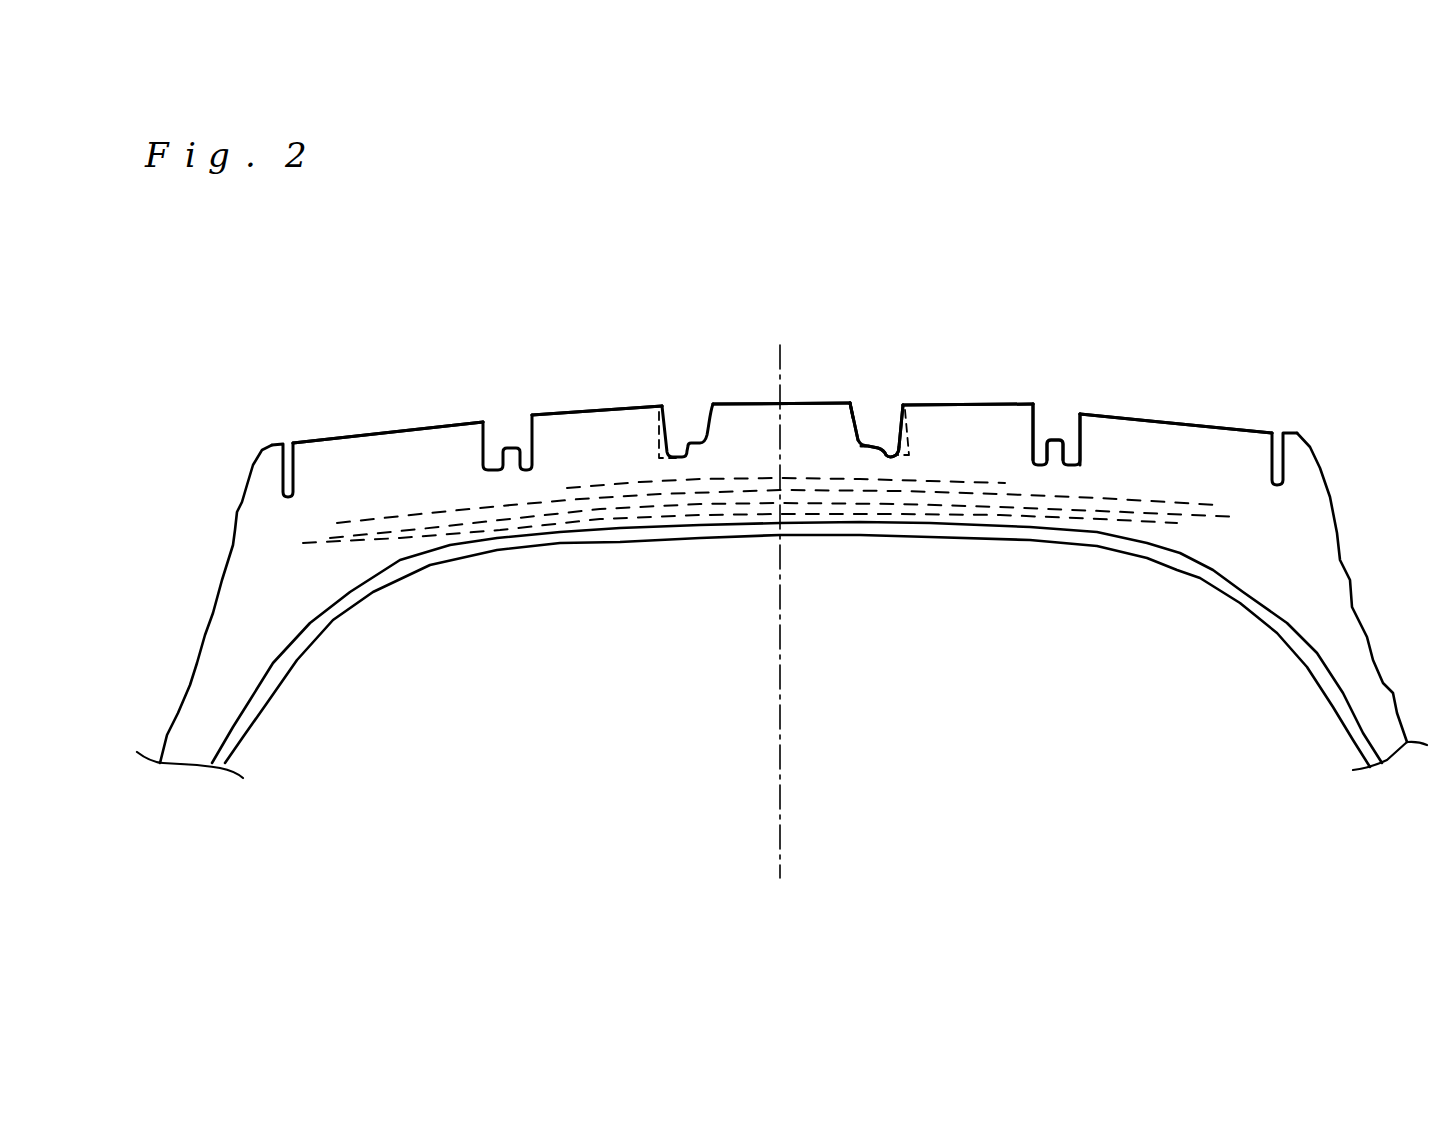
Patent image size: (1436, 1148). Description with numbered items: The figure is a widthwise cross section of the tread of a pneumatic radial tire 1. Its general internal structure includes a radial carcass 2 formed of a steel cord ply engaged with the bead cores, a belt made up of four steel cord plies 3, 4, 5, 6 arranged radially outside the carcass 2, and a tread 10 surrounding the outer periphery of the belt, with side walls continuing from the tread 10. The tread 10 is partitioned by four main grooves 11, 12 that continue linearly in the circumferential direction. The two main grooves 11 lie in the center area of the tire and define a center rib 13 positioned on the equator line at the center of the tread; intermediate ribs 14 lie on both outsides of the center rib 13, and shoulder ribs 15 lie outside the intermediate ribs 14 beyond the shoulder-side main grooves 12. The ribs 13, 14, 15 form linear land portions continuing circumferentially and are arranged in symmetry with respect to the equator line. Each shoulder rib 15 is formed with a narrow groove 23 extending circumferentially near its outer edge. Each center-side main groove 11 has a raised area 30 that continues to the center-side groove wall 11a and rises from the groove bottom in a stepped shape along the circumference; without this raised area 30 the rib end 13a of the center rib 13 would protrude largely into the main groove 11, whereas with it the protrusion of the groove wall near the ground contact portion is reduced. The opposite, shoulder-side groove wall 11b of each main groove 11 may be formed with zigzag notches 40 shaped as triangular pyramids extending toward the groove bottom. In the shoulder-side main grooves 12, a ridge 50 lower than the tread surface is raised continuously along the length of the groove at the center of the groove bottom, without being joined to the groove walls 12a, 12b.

The pneumatic tire 1 is at (1080, 273).
The radial carcass 2 is at (1283, 620).
The steel cord ply 3 is at (657, 517).
The steel cord ply 4 is at (616, 510).
The steel cord ply 5 is at (528, 503).
The steel cord ply 6 is at (579, 488).
The tread 10 is at (380, 432).
The main groove 11 is at (687, 423).
The groove wall 11a is at (857, 431).
The shoulder-side groove wall 11b is at (902, 408).
The main groove 12 is at (502, 427).
The groove wall 12a is at (1037, 432).
The groove wall 12b is at (1080, 427).
The center rib 13 is at (738, 423).
The rib end 13a is at (848, 388).
The intermediate rib 14 is at (593, 437).
The shoulder rib 15 is at (430, 440).
The narrow groove 23 is at (290, 440).
The raised area 30 is at (863, 458).
The zigzag notch 40 is at (662, 457).
The ridge 50 is at (1053, 468).